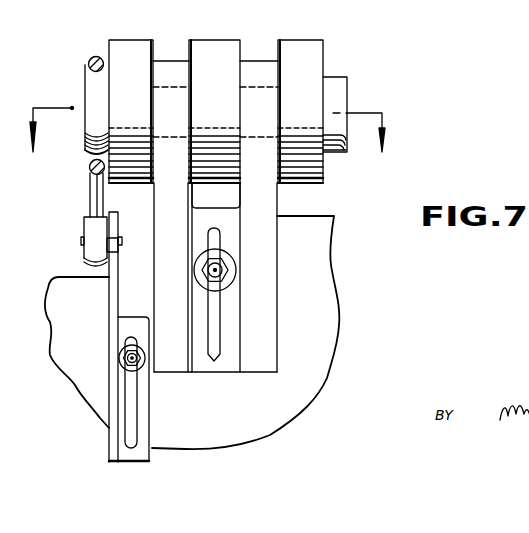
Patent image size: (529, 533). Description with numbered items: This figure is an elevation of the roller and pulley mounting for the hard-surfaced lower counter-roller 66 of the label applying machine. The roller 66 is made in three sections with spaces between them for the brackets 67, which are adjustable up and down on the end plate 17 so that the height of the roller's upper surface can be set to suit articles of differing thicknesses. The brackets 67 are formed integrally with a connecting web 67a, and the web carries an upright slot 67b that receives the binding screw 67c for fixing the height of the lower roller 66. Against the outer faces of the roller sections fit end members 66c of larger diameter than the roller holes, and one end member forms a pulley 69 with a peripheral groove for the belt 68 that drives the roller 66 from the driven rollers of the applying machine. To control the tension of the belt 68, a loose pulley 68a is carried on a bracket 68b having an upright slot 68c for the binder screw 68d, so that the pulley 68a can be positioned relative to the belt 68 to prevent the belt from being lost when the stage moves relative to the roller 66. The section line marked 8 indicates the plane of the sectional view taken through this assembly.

The section line 8- 8 is at (208, 142).
The end plate 17 is at (300, 280).
The lower counter-roller 66 is at (128, 50).
The end member 66c is at (330, 97).
The bracket 67 is at (172, 221).
The connecting web 67a is at (230, 347).
The upright slot 67b is at (215, 362).
The binding screw 67c is at (217, 268).
The belt 68 is at (96, 58).
The loose pulley 68a is at (93, 230).
The bracket 68b is at (123, 323).
The upright slot 68c is at (130, 392).
The binder screw 68d is at (118, 353).
The pulley 69 is at (97, 87).